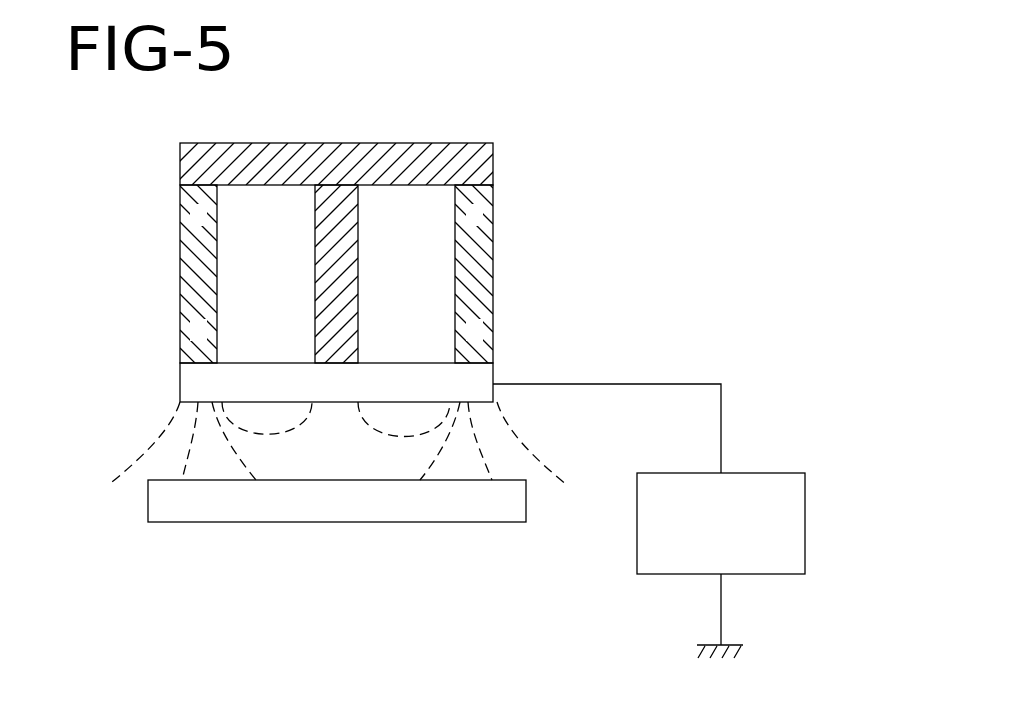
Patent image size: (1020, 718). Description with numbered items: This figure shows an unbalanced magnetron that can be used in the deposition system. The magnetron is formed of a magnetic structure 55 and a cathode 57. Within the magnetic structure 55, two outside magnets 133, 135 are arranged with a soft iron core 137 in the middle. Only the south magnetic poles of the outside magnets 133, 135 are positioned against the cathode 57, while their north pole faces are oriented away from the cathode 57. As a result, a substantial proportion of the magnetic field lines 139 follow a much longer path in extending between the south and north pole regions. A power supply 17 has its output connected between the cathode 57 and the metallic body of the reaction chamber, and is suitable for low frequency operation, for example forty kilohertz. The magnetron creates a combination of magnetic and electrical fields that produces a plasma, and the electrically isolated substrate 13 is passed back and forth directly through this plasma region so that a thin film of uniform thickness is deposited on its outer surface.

The magnetic structure 55 is at (344, 239).
The soft iron core 137 is at (362, 152).
The outside magnet 133 is at (184, 254).
The outside magnet 135 is at (494, 267).
The cathode 57 is at (179, 377).
The magnetic field lines 139 is at (518, 439).
The substrate 13 is at (192, 522).
The power supply 17 is at (797, 473).